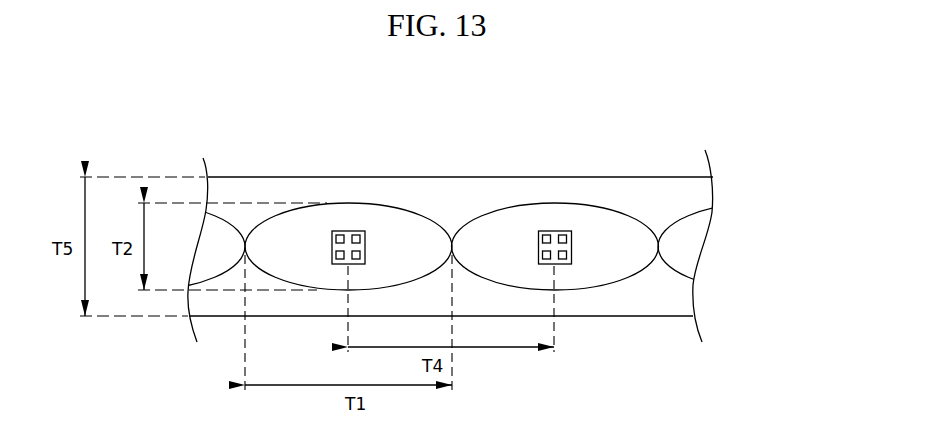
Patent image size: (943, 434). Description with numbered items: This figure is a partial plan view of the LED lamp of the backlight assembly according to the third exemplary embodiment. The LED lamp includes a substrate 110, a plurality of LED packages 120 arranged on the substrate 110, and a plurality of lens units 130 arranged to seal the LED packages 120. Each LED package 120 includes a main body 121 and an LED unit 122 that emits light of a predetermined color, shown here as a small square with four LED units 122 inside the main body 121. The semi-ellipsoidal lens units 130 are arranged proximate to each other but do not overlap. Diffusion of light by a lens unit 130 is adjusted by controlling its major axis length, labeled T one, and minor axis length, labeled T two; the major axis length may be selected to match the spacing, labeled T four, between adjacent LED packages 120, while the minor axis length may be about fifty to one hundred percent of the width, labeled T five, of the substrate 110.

The substrate 110 is at (692, 197).
The LED package 120 is at (637, 112).
The main body 121 is at (573, 246).
The LED unit 122 is at (557, 232).
The lens unit 130 is at (502, 218).